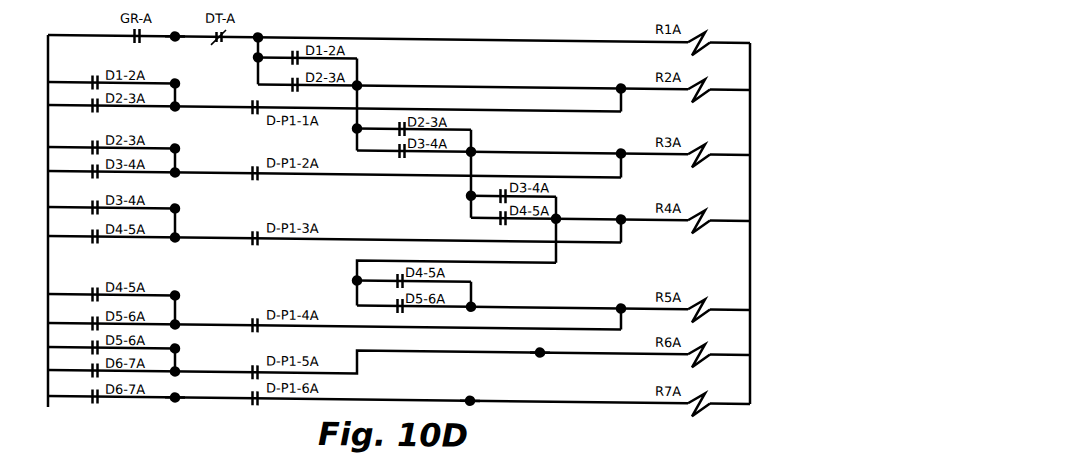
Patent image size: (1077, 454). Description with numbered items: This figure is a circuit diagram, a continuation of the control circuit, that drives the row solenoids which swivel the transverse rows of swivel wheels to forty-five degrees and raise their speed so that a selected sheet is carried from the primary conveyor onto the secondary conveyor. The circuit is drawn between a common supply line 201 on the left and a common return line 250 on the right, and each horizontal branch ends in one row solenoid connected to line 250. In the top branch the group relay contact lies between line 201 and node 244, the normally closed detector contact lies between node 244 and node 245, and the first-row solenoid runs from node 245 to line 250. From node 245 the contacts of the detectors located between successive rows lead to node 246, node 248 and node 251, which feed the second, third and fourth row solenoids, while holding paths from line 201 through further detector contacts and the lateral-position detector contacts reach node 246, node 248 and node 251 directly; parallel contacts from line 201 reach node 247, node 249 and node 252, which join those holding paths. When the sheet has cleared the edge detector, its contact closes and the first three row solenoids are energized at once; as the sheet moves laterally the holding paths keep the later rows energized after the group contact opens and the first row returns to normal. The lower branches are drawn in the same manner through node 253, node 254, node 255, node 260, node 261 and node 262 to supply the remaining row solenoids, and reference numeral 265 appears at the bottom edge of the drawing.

The common supply line 201 is at (47, 121).
The circuit node 244 is at (175, 39).
The circuit node 245 is at (258, 31).
The circuit node 246 is at (621, 79).
The circuit node 247 is at (179, 81).
The circuit node 248 is at (621, 144).
The circuit node 249 is at (179, 145).
The common return line 250 is at (750, 103).
The circuit node 251 is at (621, 210).
The circuit node 252 is at (179, 205).
The junction point 253 is at (621, 299).
The junction point 254 is at (179, 292).
The junction point 255 is at (540, 351).
The junction point 260 is at (179, 346).
The junction point 261 is at (470, 392).
The junction point 262 is at (175, 400).
The reference numeral (partially visible) 265 is at (267, 451).